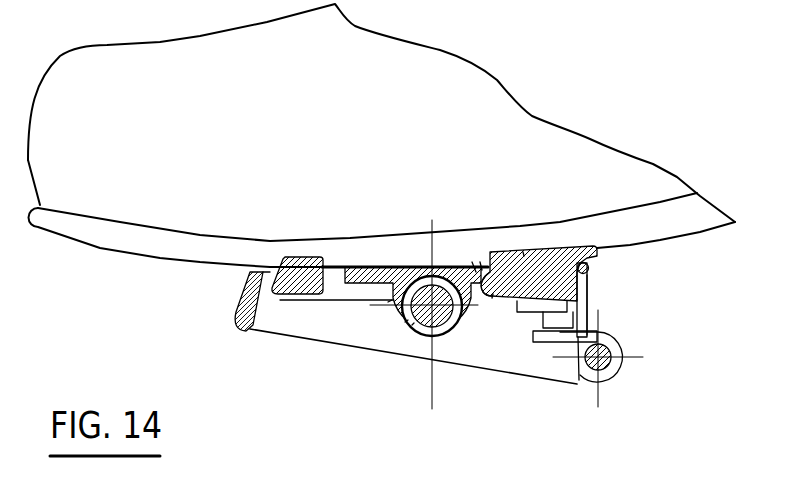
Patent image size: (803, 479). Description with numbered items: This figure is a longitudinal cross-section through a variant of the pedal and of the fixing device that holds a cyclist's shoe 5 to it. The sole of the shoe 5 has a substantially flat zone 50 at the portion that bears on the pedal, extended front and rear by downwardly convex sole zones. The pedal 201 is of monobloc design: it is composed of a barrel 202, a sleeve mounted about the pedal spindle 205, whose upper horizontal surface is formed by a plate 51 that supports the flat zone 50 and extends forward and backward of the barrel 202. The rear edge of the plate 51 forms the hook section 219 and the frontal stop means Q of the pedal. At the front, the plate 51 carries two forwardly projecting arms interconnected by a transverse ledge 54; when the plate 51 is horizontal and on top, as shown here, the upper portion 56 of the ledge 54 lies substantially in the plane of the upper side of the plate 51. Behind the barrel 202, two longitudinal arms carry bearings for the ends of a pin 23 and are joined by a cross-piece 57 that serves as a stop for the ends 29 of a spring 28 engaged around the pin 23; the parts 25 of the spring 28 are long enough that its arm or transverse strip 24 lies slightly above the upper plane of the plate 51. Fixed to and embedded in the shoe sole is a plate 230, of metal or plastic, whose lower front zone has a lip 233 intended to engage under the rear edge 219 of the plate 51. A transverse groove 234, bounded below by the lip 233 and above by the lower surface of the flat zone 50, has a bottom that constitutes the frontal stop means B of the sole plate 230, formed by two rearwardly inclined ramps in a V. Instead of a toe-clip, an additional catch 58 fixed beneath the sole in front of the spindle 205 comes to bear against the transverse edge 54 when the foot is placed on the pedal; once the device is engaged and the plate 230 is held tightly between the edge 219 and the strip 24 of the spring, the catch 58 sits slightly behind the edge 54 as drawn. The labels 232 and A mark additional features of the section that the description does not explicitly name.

The shoe 5 is at (163, 70).
The sole plate 230 is at (552, 263).
The pedal 201 is at (264, 345).
The transverse ledge 54 is at (241, 298).
The upper portion of ledge 56 is at (259, 271).
The catch 58 is at (300, 272).
The flat zone of sole 50 is at (364, 260).
The plate 51 is at (418, 262).
The hook section 219 is at (474, 262).
The transverse groove 234 is at (480, 260).
The frontal stop means of sole plate B is at (490, 266).
The heel retaining piece 232 is at (553, 283).
The frontal stop means of pedal Q is at (523, 251).
The transverse strip of spring 24 is at (590, 268).
The parts of spring 25 is at (585, 304).
The cross-piece 57 is at (590, 288).
The spring ends 29 is at (553, 340).
The spring 28 is at (615, 370).
The pin 23 is at (605, 370).
The barrel 202 is at (388, 302).
The pedal spindle 205 is at (405, 322).
The axis A is at (412, 325).
The lip 233 is at (492, 298).